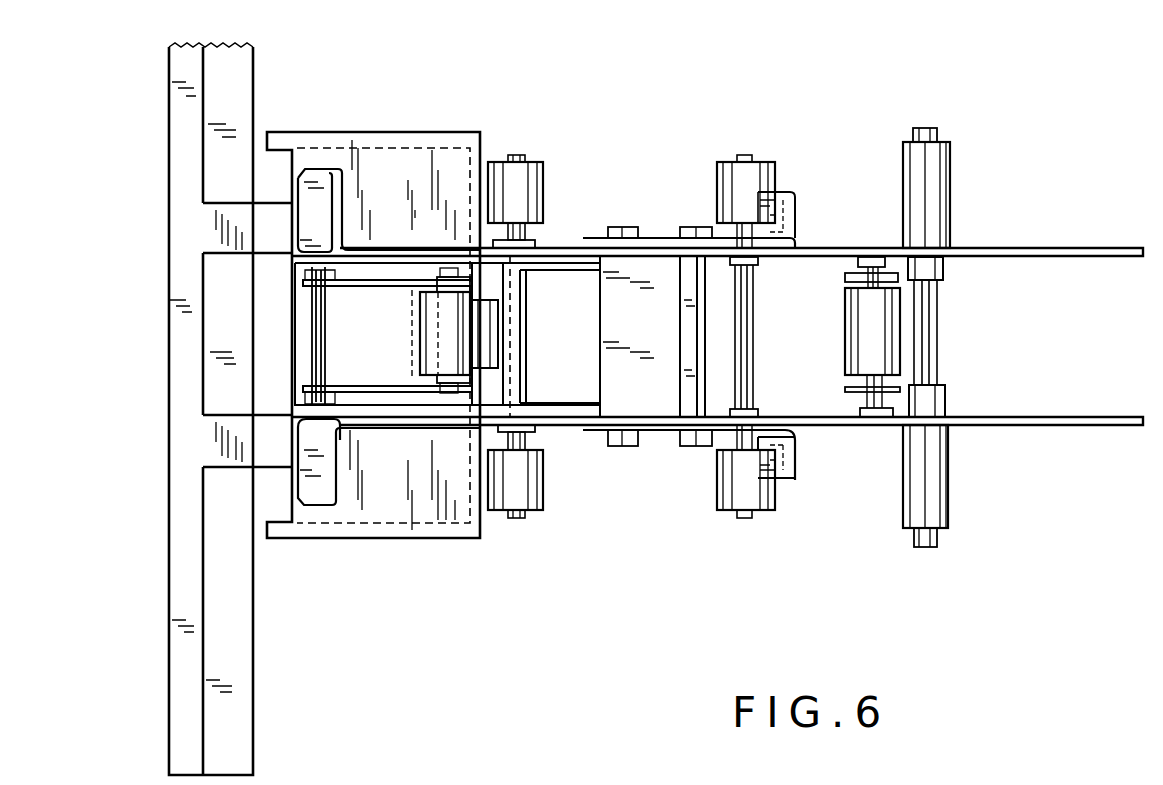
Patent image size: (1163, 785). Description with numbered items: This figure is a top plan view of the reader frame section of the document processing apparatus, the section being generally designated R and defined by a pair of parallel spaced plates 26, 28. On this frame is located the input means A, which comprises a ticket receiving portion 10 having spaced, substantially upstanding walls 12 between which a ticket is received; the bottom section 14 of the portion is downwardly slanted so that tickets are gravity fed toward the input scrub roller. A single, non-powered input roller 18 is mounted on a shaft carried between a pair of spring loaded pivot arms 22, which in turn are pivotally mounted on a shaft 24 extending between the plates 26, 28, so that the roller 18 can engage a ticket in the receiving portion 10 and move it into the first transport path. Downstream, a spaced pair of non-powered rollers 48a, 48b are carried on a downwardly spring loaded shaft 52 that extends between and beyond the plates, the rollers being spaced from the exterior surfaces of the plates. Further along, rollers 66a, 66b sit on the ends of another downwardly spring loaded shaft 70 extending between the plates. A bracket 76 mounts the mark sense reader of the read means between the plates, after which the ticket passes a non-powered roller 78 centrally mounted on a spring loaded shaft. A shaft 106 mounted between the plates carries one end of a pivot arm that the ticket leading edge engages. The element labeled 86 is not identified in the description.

The ticket receiving portion 10 is at (378, 530).
The upstanding walls 12 is at (243, 704).
The bottom section 14 is at (410, 148).
The input roller 18 is at (430, 340).
The pivot arms 22 is at (390, 290).
The shaft 24 is at (321, 308).
The plate 26 is at (1045, 416).
The plate 28 is at (1078, 247).
The roller 48a is at (543, 481).
The roller 48b is at (543, 182).
The shaft 52 is at (530, 439).
The roller 66a is at (720, 480).
The roller 66b is at (774, 176).
The shaft 70 is at (753, 320).
The bracket 76 is at (652, 244).
The roller 78 is at (854, 336).
The bolt 86 is at (845, 274).
The shaft 106 is at (937, 535).
The input means A is at (144, 212).
The read frame section R is at (1009, 184).